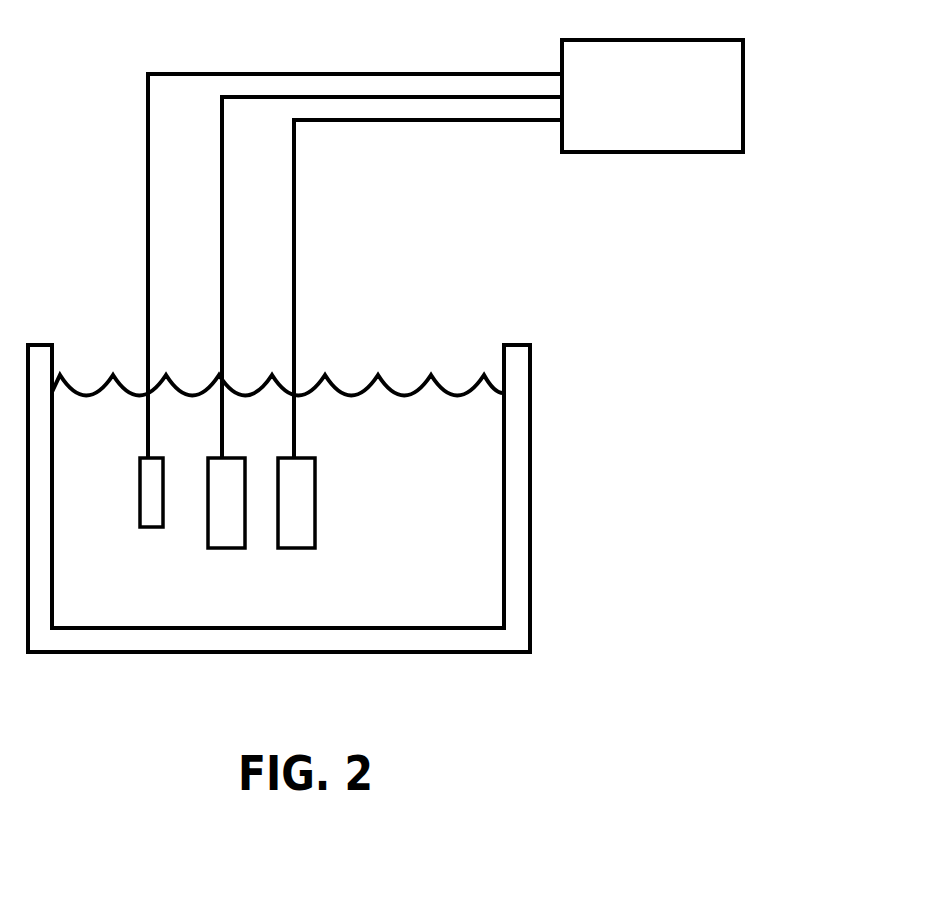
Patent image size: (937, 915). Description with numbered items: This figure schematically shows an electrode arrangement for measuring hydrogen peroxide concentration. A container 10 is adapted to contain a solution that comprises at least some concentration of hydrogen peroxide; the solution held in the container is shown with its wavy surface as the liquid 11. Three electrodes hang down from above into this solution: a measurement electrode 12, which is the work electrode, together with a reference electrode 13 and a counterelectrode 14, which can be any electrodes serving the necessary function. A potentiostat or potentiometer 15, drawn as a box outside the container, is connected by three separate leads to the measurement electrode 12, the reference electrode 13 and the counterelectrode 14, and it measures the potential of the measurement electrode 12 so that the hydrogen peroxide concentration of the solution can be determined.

The container 10 is at (530, 568).
The plating solution 11 is at (492, 438).
The measurement electrode 12 is at (226, 517).
The reference electrode 13 is at (148, 503).
The counterelectrode 14 is at (301, 527).
The potentiostat or potentiometer 15 is at (729, 101).